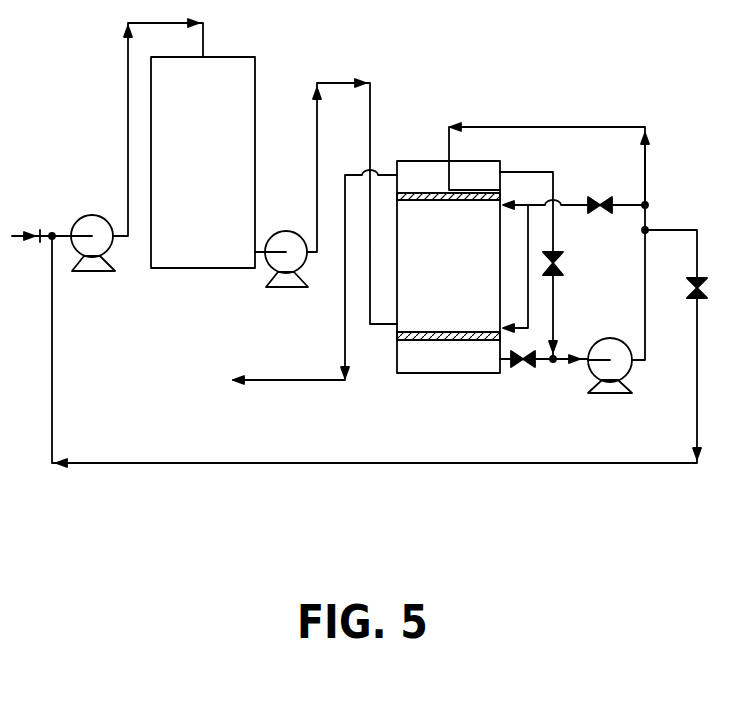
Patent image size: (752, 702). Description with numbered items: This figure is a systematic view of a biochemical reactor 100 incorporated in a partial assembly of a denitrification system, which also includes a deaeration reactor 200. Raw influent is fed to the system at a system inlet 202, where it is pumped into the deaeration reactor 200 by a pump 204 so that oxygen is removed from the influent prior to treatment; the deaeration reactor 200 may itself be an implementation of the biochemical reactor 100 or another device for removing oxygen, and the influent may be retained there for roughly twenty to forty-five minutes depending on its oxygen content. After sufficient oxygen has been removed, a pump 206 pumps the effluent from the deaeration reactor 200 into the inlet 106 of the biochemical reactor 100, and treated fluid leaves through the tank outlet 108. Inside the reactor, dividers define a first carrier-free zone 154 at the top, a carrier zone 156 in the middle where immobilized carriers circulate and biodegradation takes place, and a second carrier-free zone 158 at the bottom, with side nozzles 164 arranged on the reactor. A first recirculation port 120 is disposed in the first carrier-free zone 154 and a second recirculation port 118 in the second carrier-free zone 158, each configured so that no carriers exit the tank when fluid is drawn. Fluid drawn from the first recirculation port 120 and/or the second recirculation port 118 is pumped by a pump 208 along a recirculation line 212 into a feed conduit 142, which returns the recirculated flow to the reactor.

The biochemical reactor 100 is at (468, 62).
The tank inlet 106 is at (395, 326).
The tank outlet 108 is at (397, 176).
The second tank recirculation port 118 is at (503, 365).
The first tank recirculation port 120 is at (502, 172).
The feed conduit 142 is at (449, 170).
The first carrier-free zone 154 is at (442, 187).
The carrier zone 156 is at (452, 272).
The second carrier-free zone 158 is at (465, 366).
The side nozzles 164 is at (500, 202).
The deaeration reactor 200 is at (231, 57).
The system inlet 202 is at (12, 236).
The pump 204 is at (100, 214).
The pump 206 is at (292, 231).
The pump 208 is at (613, 338).
The recirculation line 212 is at (558, 127).